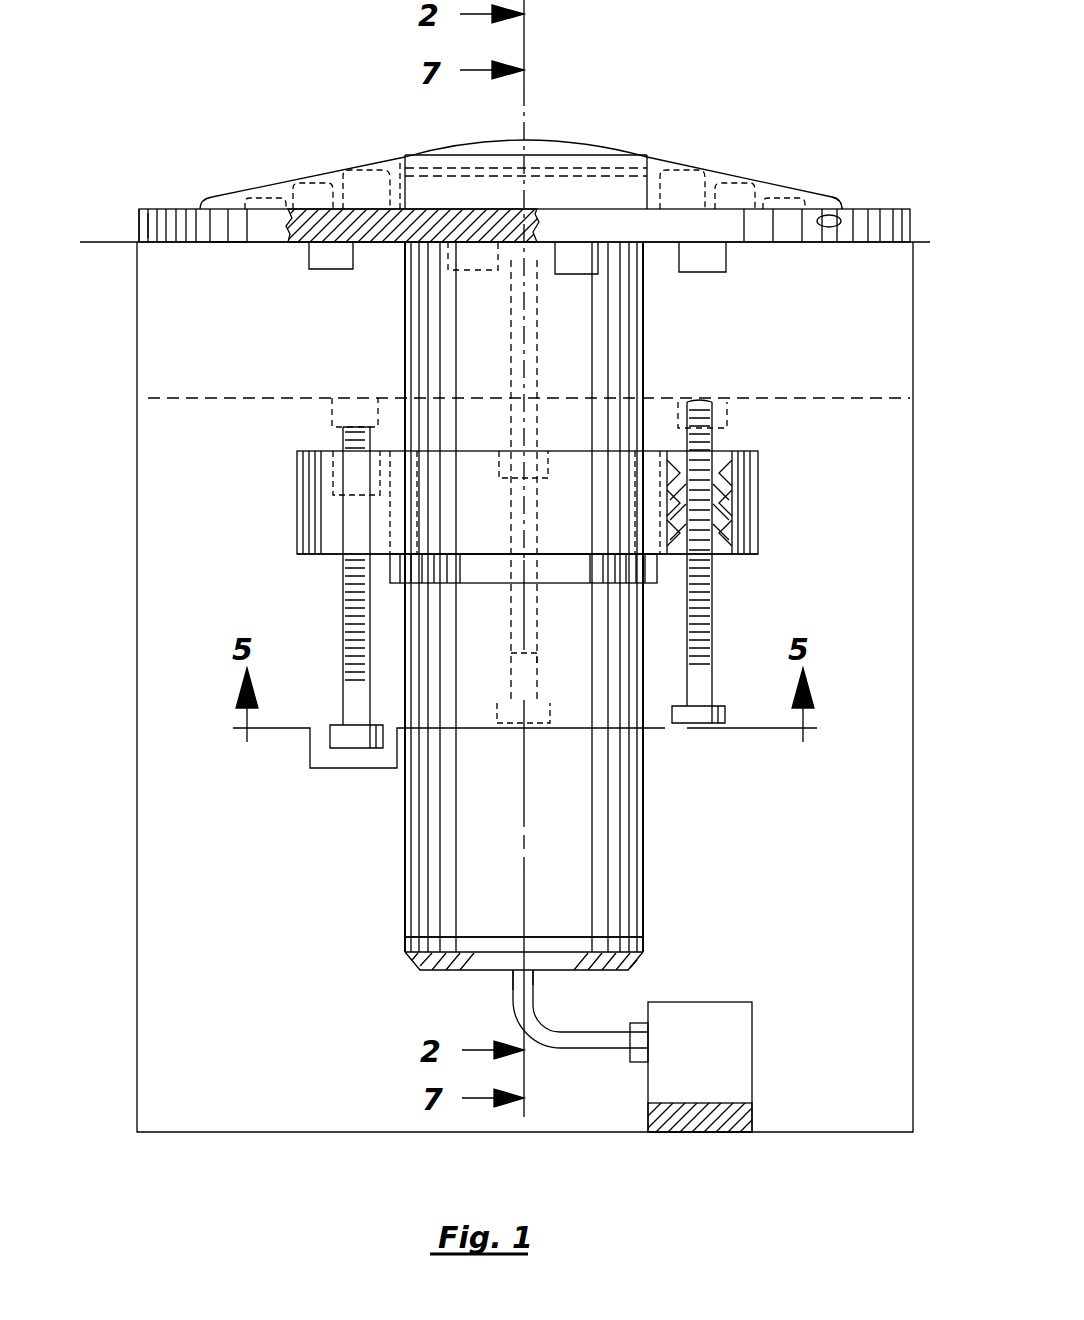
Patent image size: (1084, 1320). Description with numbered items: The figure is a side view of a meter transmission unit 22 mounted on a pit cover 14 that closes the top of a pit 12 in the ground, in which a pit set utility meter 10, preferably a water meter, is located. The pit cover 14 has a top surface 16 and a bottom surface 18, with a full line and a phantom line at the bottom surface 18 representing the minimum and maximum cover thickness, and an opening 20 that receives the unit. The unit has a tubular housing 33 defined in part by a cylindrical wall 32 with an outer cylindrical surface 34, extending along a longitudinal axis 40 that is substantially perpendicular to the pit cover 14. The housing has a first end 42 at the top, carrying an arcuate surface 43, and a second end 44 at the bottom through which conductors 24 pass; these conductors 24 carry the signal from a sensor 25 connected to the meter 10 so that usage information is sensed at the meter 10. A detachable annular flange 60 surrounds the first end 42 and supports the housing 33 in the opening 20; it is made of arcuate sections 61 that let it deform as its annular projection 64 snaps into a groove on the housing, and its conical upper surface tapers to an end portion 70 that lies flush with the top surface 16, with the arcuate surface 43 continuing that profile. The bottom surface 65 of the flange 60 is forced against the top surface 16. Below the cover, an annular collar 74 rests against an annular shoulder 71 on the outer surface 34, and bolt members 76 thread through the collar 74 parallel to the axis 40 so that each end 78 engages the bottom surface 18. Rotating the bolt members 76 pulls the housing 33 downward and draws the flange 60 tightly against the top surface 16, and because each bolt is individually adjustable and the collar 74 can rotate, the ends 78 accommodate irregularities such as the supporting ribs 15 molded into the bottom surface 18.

The pit set utility meter 10 is at (752, 1022).
The pit 12 is at (150, 926).
The pit cover 14 is at (878, 213).
The supporting ribs 15 is at (322, 282).
The top surface 16 is at (165, 205).
The bottom surface 18 is at (222, 256).
The opening 20 is at (640, 272).
The meter transmission unit 22 is at (268, 506).
The conductors 24 is at (550, 1018).
The sensor 25 is at (632, 1068).
The cylindrical wall 32 is at (648, 852).
The tubular housing 33 is at (668, 796).
The outer cylindrical surface 34 is at (652, 162).
The longitudinal axis 40 is at (514, 996).
The first end 42 is at (596, 162).
The arcuate surface 43 is at (552, 142).
The second end 44 is at (442, 972).
The detachable annular flange 60 is at (240, 178).
The arcuate sections 61 is at (705, 168).
The annular projection 64 is at (392, 152).
The bottom surface 65 is at (842, 216).
The end portion 70 is at (835, 204).
The annular shoulder 71 is at (696, 582).
The annular collar 74 is at (762, 486).
The bolt members 76 is at (344, 674).
The end 78 is at (700, 400).